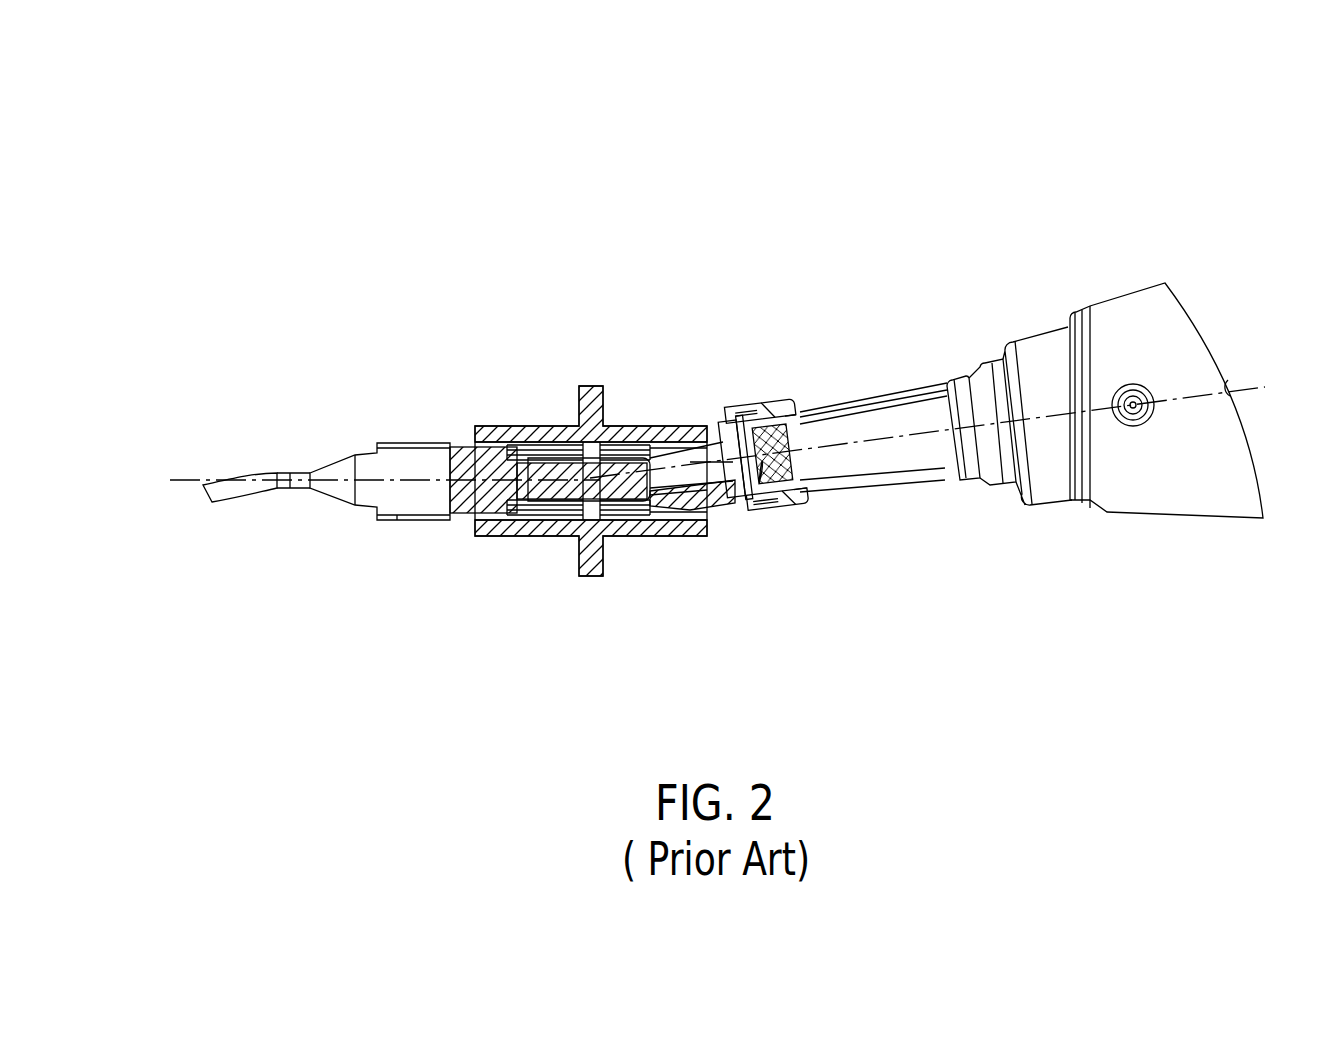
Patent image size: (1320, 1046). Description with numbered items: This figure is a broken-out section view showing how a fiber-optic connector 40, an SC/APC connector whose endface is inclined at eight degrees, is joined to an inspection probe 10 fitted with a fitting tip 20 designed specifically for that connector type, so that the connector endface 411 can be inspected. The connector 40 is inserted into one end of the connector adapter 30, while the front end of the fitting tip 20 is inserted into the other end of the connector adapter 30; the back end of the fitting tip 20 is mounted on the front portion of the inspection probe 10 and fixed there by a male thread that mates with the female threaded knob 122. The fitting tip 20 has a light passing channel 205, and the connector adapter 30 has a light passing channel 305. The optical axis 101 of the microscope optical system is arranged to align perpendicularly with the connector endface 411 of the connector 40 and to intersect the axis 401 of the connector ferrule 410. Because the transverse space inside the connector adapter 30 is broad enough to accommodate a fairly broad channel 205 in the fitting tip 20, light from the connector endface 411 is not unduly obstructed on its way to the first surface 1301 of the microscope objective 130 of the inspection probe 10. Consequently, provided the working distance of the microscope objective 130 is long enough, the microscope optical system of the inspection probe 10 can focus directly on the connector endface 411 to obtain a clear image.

The inspection probe 10 is at (1085, 290).
The optical axis 101 is at (912, 437).
The female threaded knob 122 is at (748, 402).
The microscope objective 130 is at (797, 417).
The first surface 1301 is at (733, 505).
The fitting tip 20 is at (710, 508).
The light passing channel 205 is at (708, 452).
The connector adapter 30 is at (563, 387).
The light passing channel 305 is at (633, 513).
The fiber-optic connector 40 is at (422, 425).
The axis 401 is at (333, 462).
The connector ferrule 410 is at (560, 518).
The endface 411 is at (638, 430).